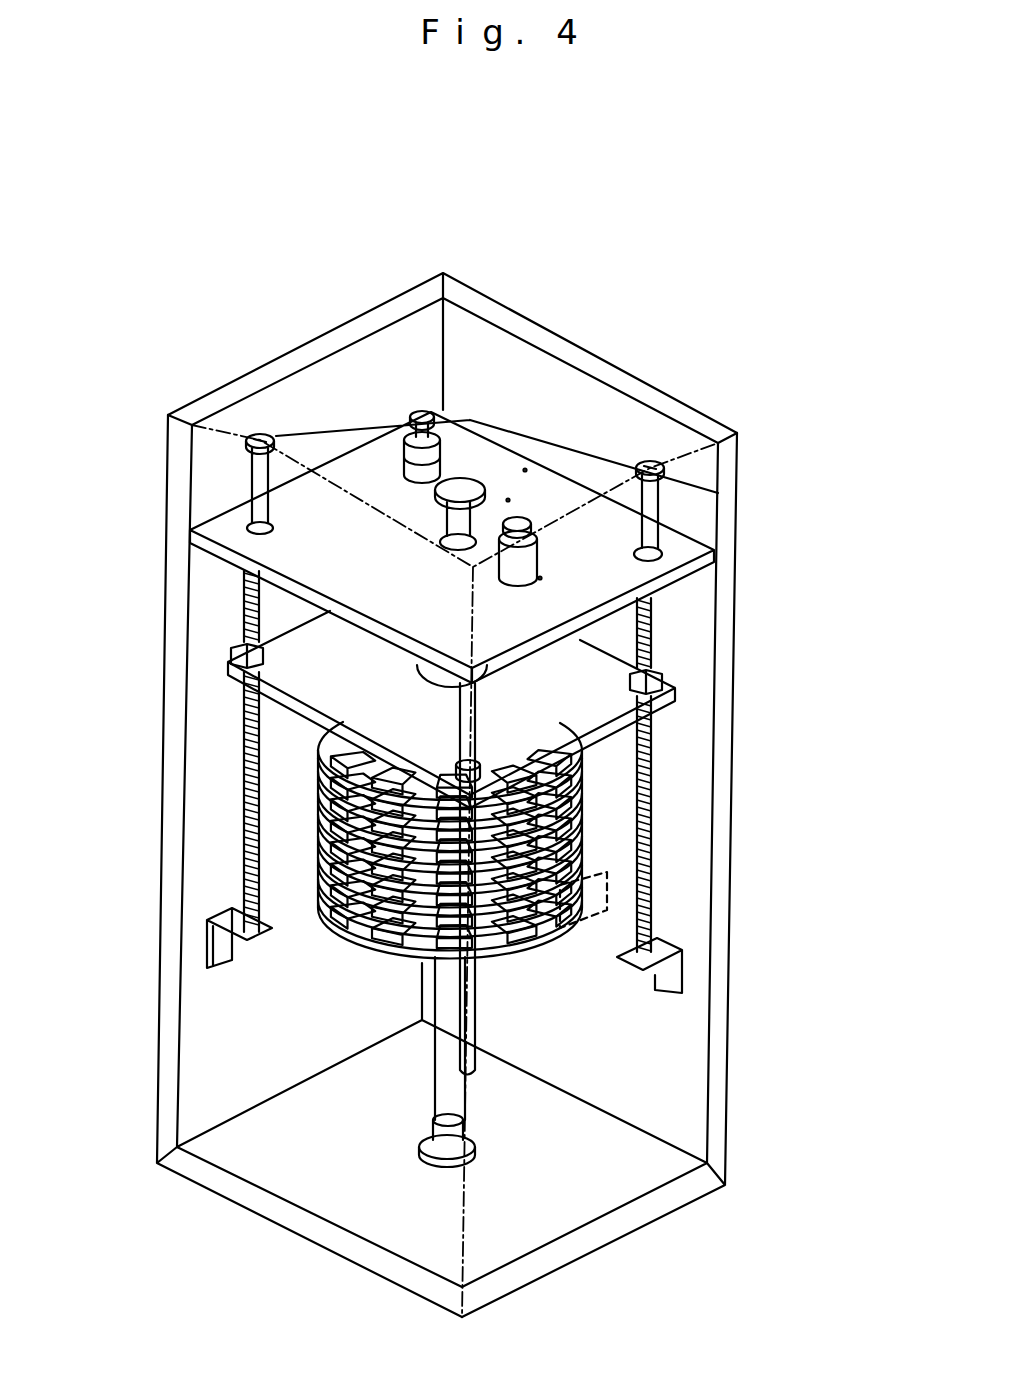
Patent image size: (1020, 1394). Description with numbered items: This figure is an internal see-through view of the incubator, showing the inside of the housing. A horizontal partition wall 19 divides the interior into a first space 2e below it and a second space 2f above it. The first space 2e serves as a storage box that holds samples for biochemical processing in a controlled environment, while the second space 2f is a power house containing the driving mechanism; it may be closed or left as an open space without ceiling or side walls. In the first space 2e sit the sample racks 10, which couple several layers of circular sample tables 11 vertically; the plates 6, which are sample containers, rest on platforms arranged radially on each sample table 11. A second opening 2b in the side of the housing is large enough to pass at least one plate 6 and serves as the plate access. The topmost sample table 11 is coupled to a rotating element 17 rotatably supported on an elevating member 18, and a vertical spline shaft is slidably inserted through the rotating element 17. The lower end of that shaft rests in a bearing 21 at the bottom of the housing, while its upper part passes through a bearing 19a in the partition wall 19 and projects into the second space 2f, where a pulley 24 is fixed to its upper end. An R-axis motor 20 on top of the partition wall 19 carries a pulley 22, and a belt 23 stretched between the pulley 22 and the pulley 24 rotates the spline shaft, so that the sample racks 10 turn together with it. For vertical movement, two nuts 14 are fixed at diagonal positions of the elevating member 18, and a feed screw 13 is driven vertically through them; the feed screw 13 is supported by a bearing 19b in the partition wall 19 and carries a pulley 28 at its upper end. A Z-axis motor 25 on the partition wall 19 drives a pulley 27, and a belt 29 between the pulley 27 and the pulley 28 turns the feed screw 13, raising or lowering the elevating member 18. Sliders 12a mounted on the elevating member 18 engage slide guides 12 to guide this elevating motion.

The second opening 2b is at (615, 888).
The first space 2e is at (668, 1090).
The second space 2f is at (493, 350).
The plate 6 is at (340, 758).
The sample rack 10 is at (321, 909).
The sample table 11 is at (345, 925).
The slide guide 12 is at (478, 999).
The slider 12a is at (570, 750).
The feed screw 13 is at (243, 829).
The nut 14 is at (242, 658).
The rotating element 17 is at (410, 683).
The elevating member 18 is at (290, 681).
The partition wall 19 is at (540, 618).
The bearing 19a is at (438, 547).
The bearing 19b is at (440, 546).
The R-axis motor 20 is at (662, 525).
The bearing 21 is at (300, 1196).
The pulley 22 is at (533, 528).
The belt 23 is at (525, 470).
The pulley 24 is at (443, 492).
The Z-axis motor 25 is at (403, 350).
The pulley 27 is at (425, 415).
The pulley 28 is at (258, 438).
The belt 29 is at (508, 500).